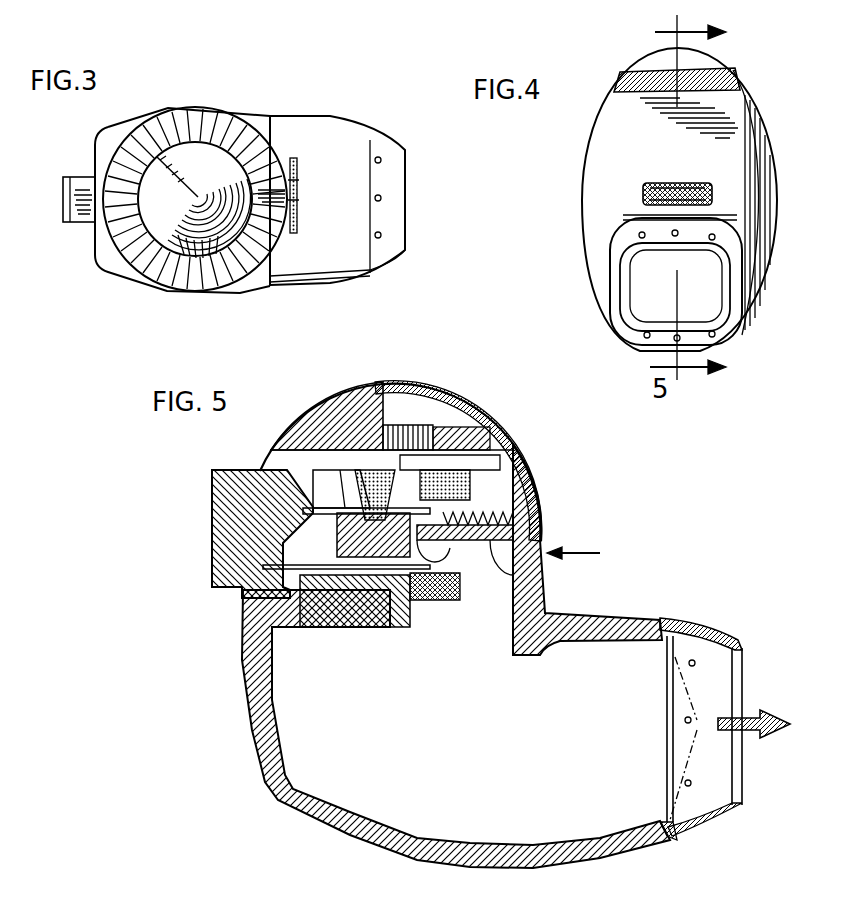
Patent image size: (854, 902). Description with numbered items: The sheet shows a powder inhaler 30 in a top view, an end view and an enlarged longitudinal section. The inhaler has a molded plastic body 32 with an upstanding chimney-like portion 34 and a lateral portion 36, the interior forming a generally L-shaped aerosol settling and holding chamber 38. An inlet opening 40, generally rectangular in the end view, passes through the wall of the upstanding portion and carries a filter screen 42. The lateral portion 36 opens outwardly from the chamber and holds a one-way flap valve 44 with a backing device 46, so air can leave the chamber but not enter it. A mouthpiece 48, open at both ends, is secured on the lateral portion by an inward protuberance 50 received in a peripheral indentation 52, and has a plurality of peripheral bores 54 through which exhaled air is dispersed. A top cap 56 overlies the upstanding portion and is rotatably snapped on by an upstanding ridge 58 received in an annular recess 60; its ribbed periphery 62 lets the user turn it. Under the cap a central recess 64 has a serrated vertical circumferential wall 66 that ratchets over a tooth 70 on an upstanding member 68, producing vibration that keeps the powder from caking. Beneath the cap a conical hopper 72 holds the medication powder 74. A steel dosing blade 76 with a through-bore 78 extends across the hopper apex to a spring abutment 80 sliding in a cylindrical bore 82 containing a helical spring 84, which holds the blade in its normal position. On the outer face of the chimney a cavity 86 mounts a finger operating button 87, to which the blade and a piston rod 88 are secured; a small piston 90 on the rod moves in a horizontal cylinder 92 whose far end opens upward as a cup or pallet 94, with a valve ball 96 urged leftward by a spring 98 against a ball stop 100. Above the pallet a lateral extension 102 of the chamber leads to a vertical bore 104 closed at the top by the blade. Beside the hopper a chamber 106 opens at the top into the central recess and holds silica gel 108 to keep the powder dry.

In FIG. 3, the powder inhaler 30 is at (152, 296).
In FIG. 4, the powder inhaler 30 is at (585, 290).
In FIG. 5, the powder inhaler 30 is at (246, 741).
In FIG. 3, the molded plastic body 32 is at (268, 117).
In FIG. 4, the molded plastic body 32 is at (595, 202).
In FIG. 5, the molded plastic body 32 is at (263, 780).
In FIG. 3, the upstanding chimney-like portion 34 is at (135, 125).
In FIG. 4, the upstanding chimney-like portion 34 is at (620, 137).
In FIG. 5, the upstanding chimney-like portion 34 is at (540, 472).
In FIG. 3, the lateral portion 36 is at (315, 257).
In FIG. 4, the lateral portion 36 is at (608, 280).
In FIG. 5, the lateral portion 36 is at (595, 615).
In FIG. 5, the aerosol settling and holding chamber 38 is at (474, 729).
In FIG. 3, the inlet opening 40 is at (295, 160).
In FIG. 4, the inlet opening 40 is at (655, 182).
In FIG. 5, the inlet opening 40 is at (459, 585).
In FIG. 3, the filter screen 42 is at (297, 180).
In FIG. 4, the filter screen 42 is at (697, 182).
In FIG. 5, the filter screen 42 is at (546, 553).
In FIG. 5, the one-way flap valve 44 is at (667, 692).
In FIG. 5, the backing device 46 is at (670, 720).
In FIG. 3, the mouthpiece 48 is at (387, 155).
In FIG. 4, the mouthpiece 48 is at (723, 337).
In FIG. 5, the mouthpiece 48 is at (722, 638).
In FIG. 5, the inward protuberance 50 is at (655, 620).
In FIG. 5, the peripheral indentation 52 is at (665, 648).
In FIG. 3, the peripheral bores 54 is at (381, 237).
In FIG. 4, the peripheral bores 54 is at (615, 293).
In FIG. 5, the peripheral bores 54 is at (697, 622).
In FIG. 3, the top cap 56 is at (220, 150).
In FIG. 4, the top cap 56 is at (647, 55).
In FIG. 5, the top cap 56 is at (410, 383).
In FIG. 5, the upstanding ridge 58 is at (510, 442).
In FIG. 5, the annular recess 60 is at (497, 422).
In FIG. 3, the ribbed periphery 62 is at (190, 118).
In FIG. 4, the ribbed periphery 62 is at (625, 82).
In FIG. 5, the ribbed periphery 62 is at (297, 420).
In FIG. 5, the central recess 64 is at (417, 425).
In FIG. 5, the vertical circumferential wall 66 is at (448, 413).
In FIG. 5, the upstanding member 68 is at (410, 460).
In FIG. 5, the tooth 70 is at (480, 465).
In FIG. 5, the conical hopper 72 is at (347, 403).
In FIG. 5, the medication powder 74 is at (343, 487).
In FIG. 5, the dosing blade 76 is at (352, 530).
In FIG. 5, the through-bore 78 is at (373, 536).
In FIG. 5, the spring abutment 80 is at (465, 557).
In FIG. 5, the cylindrical bore 82 is at (540, 483).
In FIG. 5, the helical spring 84 is at (465, 539).
In FIG. 5, the cavity 86 is at (330, 627).
In FIG. 3, the finger operating button 87 is at (80, 177).
In FIG. 5, the finger operating button 87 is at (228, 537).
In FIG. 5, the piston rod 88 is at (322, 627).
In FIG. 5, the small piston 90 is at (335, 565).
In FIG. 5, the horizontal cylinder 92 is at (368, 627).
In FIG. 5, the cup or pallet 94 is at (412, 595).
In FIG. 5, the valve ball 96 is at (395, 627).
In FIG. 5, the spring 98 is at (405, 610).
In FIG. 5, the ball stop 100 is at (388, 627).
In FIG. 5, the lateral extension 102 is at (467, 583).
In FIG. 5, the vertical bore 104 is at (445, 485).
In FIG. 5, the rim 106 is at (513, 452).
In FIG. 5, the silica gel chamber 108 is at (513, 462).